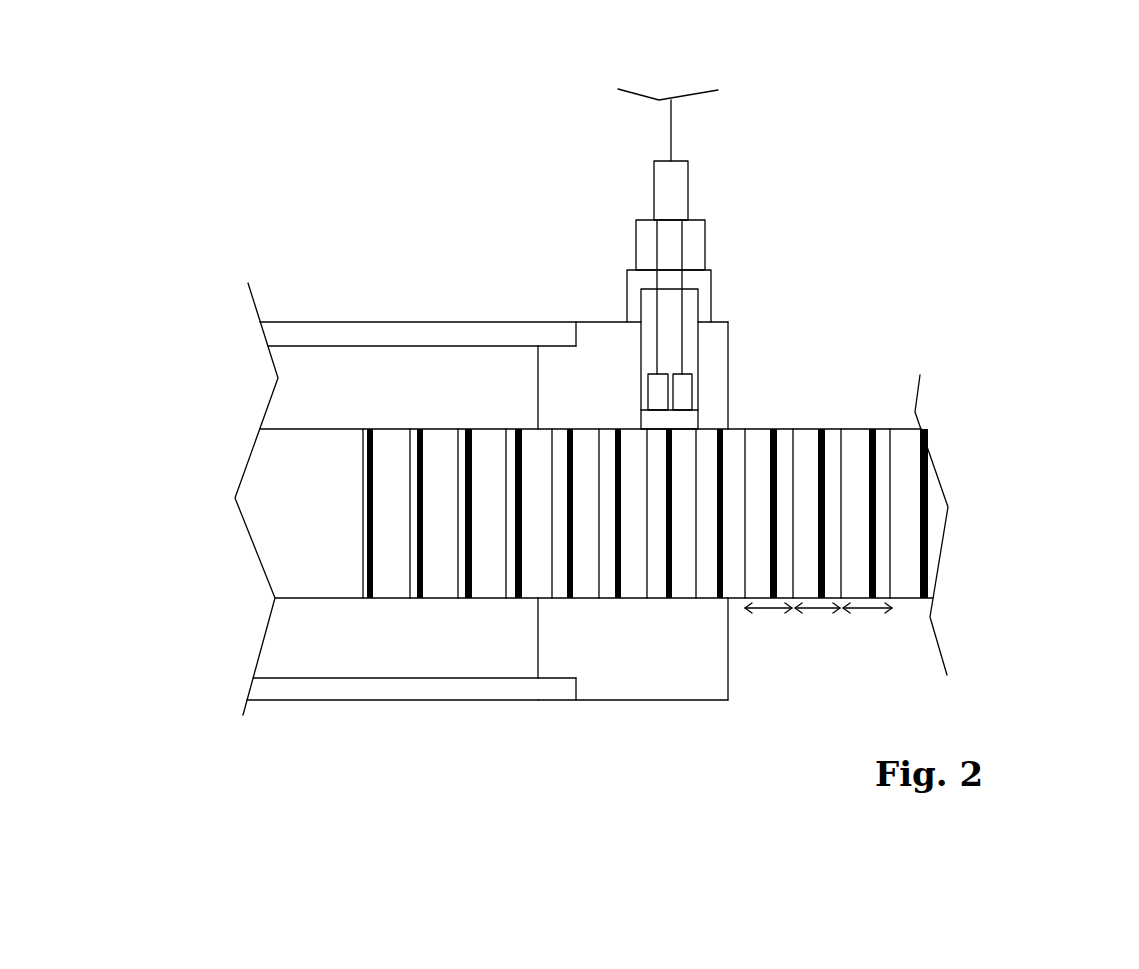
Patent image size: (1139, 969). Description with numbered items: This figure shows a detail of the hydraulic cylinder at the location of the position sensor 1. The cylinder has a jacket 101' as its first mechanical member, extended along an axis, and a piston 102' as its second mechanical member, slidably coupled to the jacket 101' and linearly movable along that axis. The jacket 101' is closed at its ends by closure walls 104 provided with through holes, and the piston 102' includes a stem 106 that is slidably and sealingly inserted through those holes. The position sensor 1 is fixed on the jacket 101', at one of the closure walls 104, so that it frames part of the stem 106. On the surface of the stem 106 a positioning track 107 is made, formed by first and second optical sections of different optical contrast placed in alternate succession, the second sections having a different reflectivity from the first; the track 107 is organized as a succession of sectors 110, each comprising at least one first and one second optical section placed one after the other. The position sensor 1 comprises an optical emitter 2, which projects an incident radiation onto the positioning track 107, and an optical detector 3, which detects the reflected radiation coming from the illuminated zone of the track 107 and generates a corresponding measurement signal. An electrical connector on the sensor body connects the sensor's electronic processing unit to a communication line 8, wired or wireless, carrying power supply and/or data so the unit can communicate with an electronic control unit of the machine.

The position sensor 1 is at (730, 233).
The optical emitter 2 is at (657, 387).
The optical detector 3 is at (684, 388).
The communication line 8 is at (684, 125).
The jacket 101' is at (447, 225).
The piston 102' is at (411, 711).
The closure wall 104 is at (662, 665).
The stem 106 is at (300, 522).
The positioning track 107 is at (810, 467).
The sector 110 is at (773, 618).